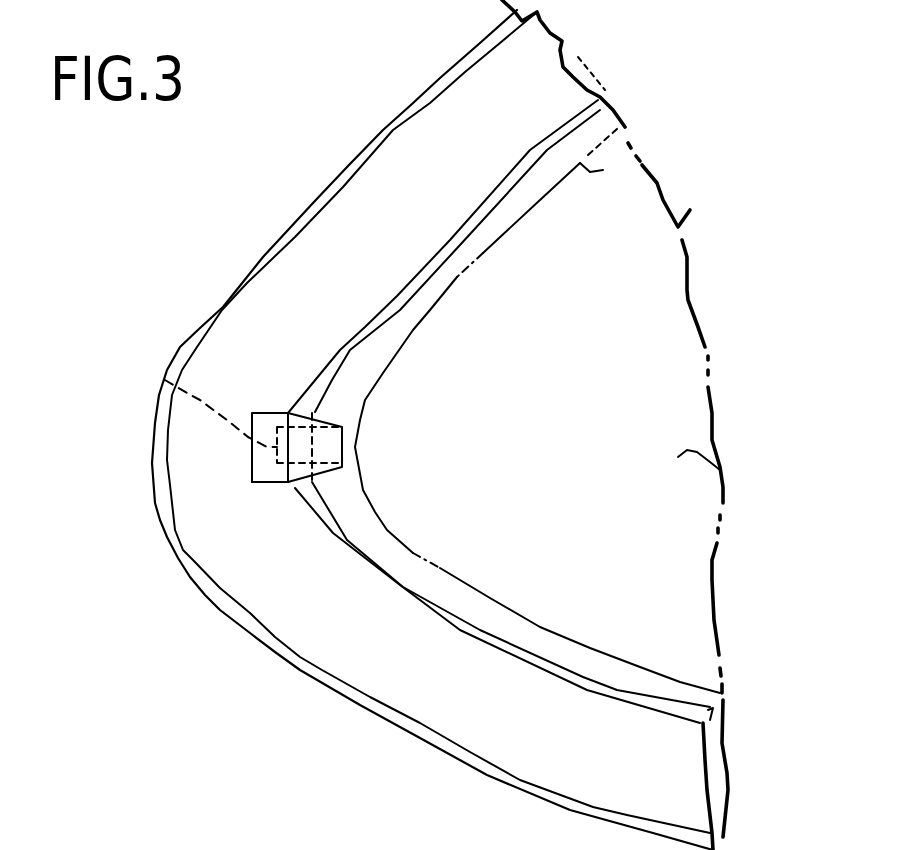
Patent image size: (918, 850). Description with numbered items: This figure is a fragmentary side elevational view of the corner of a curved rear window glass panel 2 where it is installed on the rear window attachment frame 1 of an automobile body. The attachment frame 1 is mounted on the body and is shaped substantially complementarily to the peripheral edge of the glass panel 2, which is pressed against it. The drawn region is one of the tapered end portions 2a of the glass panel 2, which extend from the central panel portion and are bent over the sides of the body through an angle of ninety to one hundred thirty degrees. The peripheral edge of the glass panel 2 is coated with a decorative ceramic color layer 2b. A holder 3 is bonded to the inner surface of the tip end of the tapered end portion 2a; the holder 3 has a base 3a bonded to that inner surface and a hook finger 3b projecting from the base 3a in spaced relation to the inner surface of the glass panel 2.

The rear window attachment frame 1 is at (560, 50).
The curved rear window glass panel 2 is at (690, 210).
The end portions 2a is at (167, 490).
The decorative ceramic color layer 2b is at (632, 147).
The holder 3 is at (343, 452).
The base 3a is at (263, 483).
The hook finger 3b is at (165, 380).